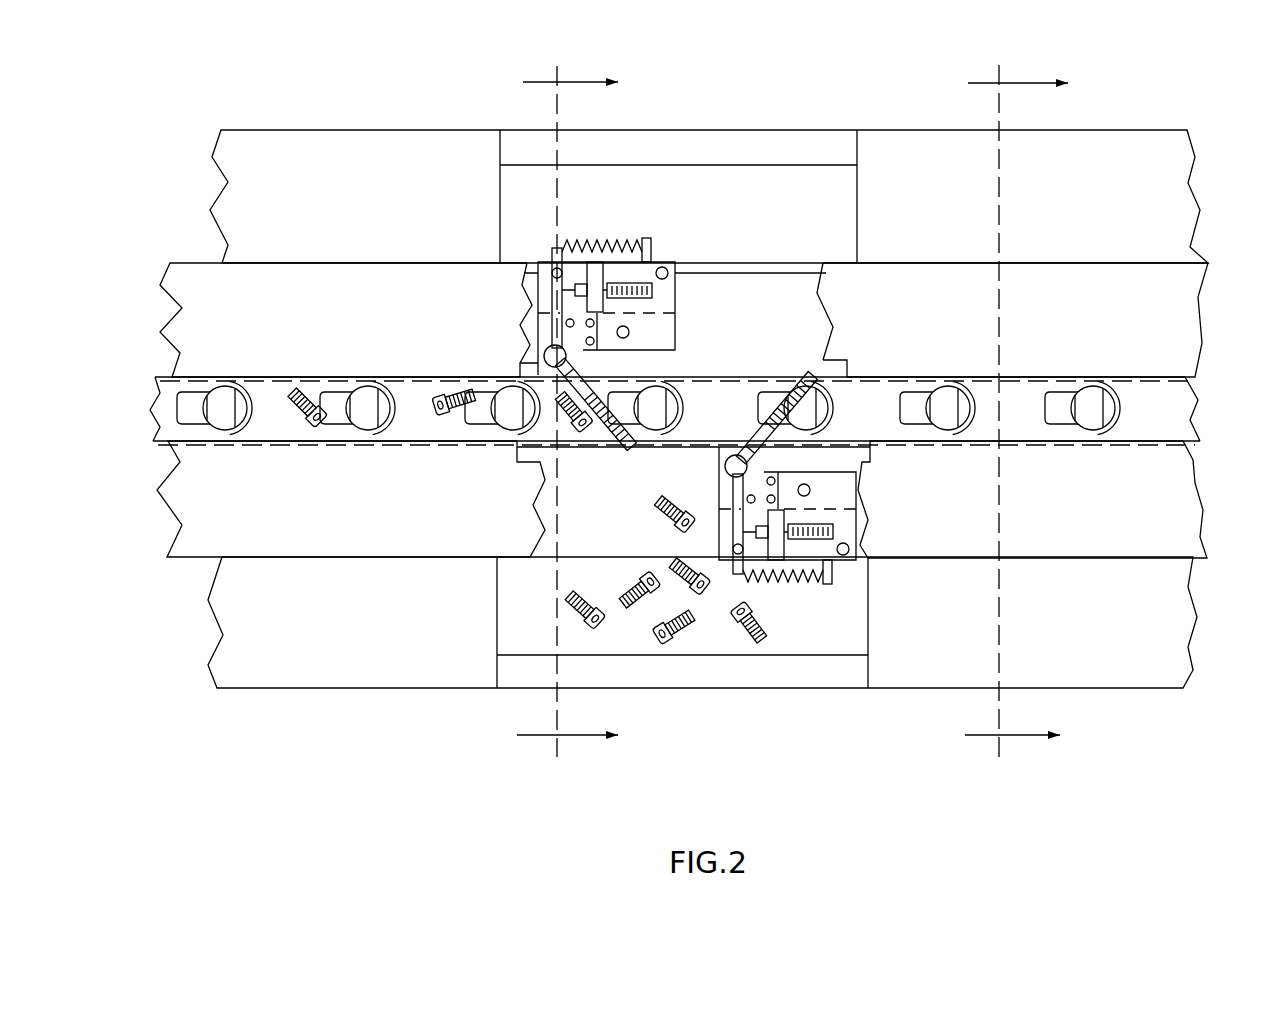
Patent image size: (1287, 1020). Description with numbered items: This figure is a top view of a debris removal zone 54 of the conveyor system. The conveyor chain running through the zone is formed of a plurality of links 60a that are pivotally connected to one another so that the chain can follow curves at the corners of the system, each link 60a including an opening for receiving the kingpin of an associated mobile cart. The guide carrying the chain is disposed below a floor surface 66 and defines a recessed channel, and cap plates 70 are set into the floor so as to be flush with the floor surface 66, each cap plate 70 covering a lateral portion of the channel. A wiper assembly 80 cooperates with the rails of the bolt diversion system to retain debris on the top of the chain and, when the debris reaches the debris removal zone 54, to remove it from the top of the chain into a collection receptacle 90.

The debris removal zone 54 is at (694, 410).
The link 60a is at (262, 440).
The floor surface 66 is at (326, 148).
The cap plate 70 is at (302, 278).
The wiper assembly 80 is at (705, 248).
The collection receptacle 90 is at (672, 148).